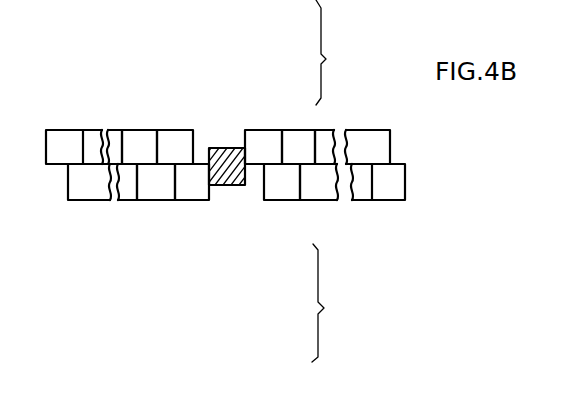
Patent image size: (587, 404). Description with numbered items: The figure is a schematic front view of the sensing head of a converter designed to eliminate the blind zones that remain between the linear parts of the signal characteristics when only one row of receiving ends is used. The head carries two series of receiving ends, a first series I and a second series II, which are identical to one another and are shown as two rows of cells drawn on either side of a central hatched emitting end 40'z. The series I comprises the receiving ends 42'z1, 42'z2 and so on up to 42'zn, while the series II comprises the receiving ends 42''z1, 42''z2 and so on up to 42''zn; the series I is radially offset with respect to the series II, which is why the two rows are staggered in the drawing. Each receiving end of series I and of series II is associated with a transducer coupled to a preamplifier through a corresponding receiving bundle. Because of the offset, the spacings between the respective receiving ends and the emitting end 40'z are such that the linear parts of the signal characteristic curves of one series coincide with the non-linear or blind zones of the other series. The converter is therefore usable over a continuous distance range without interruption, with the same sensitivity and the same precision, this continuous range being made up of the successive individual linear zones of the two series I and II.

The receiving end 42''zn is at (229, 113).
The receiving end 42''z2 is at (226, 137).
The receiving end 42''z1 is at (228, 153).
The emitting end 40'z is at (221, 183).
The receiving end 42'z1 is at (228, 197).
The receiving end 42'z2 is at (229, 223).
The receiving end 42'zn is at (225, 244).
The series of receiving ends II is at (349, 67).
The series of receiving ends I is at (340, 313).